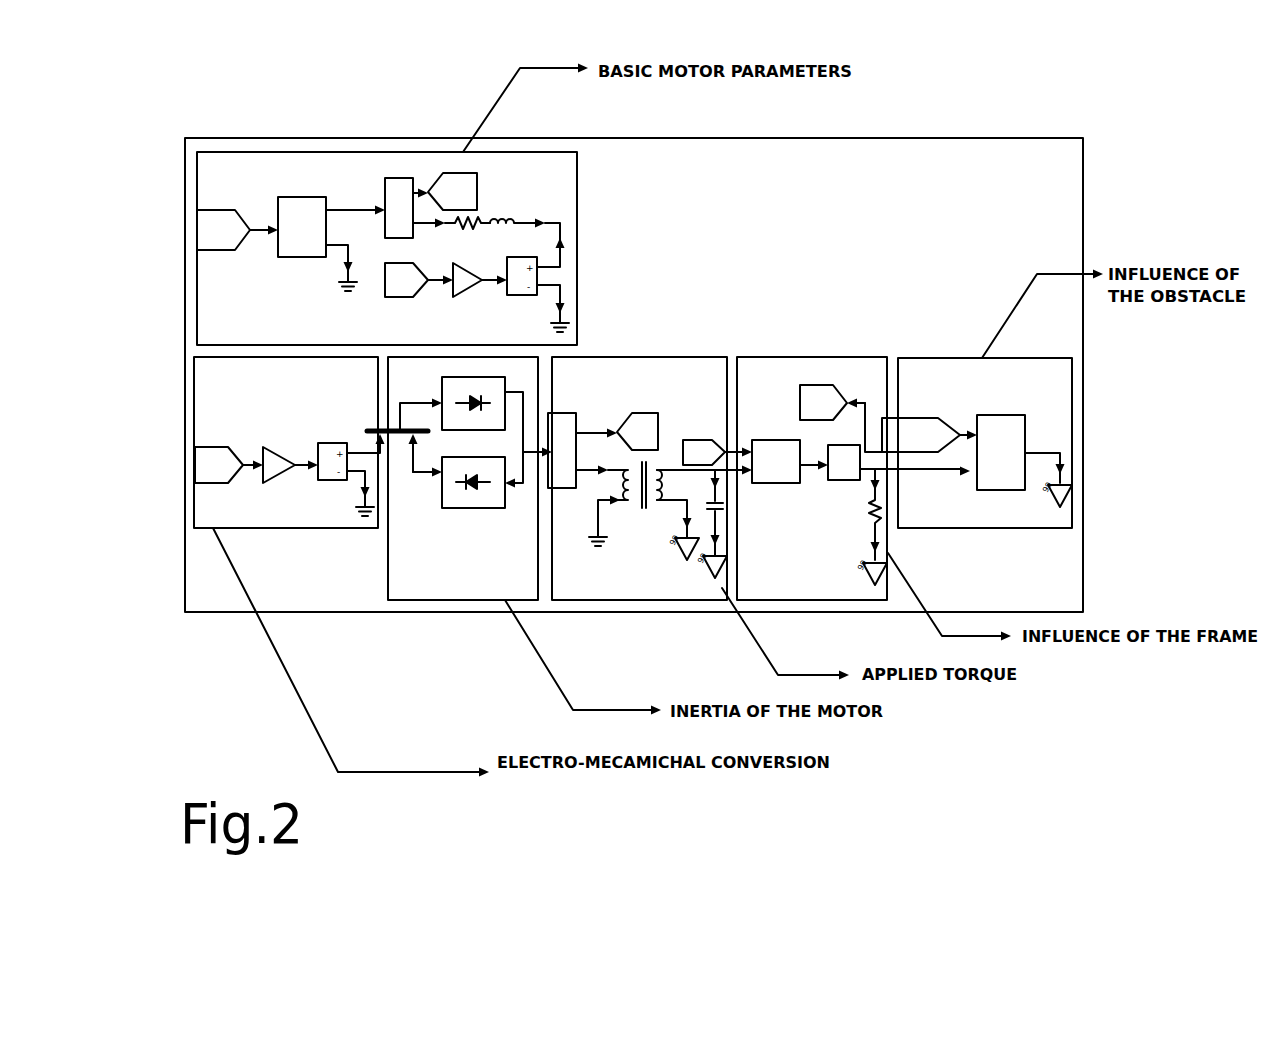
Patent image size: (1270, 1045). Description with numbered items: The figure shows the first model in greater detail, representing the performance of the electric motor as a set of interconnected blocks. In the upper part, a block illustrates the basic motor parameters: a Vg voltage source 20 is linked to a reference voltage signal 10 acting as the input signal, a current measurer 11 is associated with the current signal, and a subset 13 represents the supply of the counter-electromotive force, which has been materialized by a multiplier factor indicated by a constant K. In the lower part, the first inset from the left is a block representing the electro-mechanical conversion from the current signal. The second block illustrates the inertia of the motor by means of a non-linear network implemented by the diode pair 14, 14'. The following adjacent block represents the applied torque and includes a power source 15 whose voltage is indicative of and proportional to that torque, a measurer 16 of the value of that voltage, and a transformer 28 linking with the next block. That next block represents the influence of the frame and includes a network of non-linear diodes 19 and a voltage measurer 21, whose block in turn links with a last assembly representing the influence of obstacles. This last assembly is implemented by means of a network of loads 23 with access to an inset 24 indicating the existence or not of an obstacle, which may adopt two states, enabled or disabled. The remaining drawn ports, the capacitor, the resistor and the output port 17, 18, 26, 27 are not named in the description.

The reference voltage signal 10 is at (205, 231).
The Vg voltage source 20 is at (298, 203).
The current measurer 11 is at (398, 180).
The subset representing the supply of the counter-electromotive force 13 is at (390, 290).
The diode 14' is at (317, 403).
The diode 14 is at (459, 556).
The measurer 16 is at (565, 413).
The power source 15 is at (640, 413).
The transformer 28 is at (630, 492).
The capacitor 18 is at (708, 517).
The input port (applied torque) 17 is at (693, 440).
The network of non-linear diodes 19 is at (770, 440).
The voltage measurer 21 is at (843, 480).
The output port 26 is at (820, 385).
The resistor (frame friction) 27 is at (870, 525).
The inset 24 is at (937, 418).
The network of loads 23 is at (1017, 430).